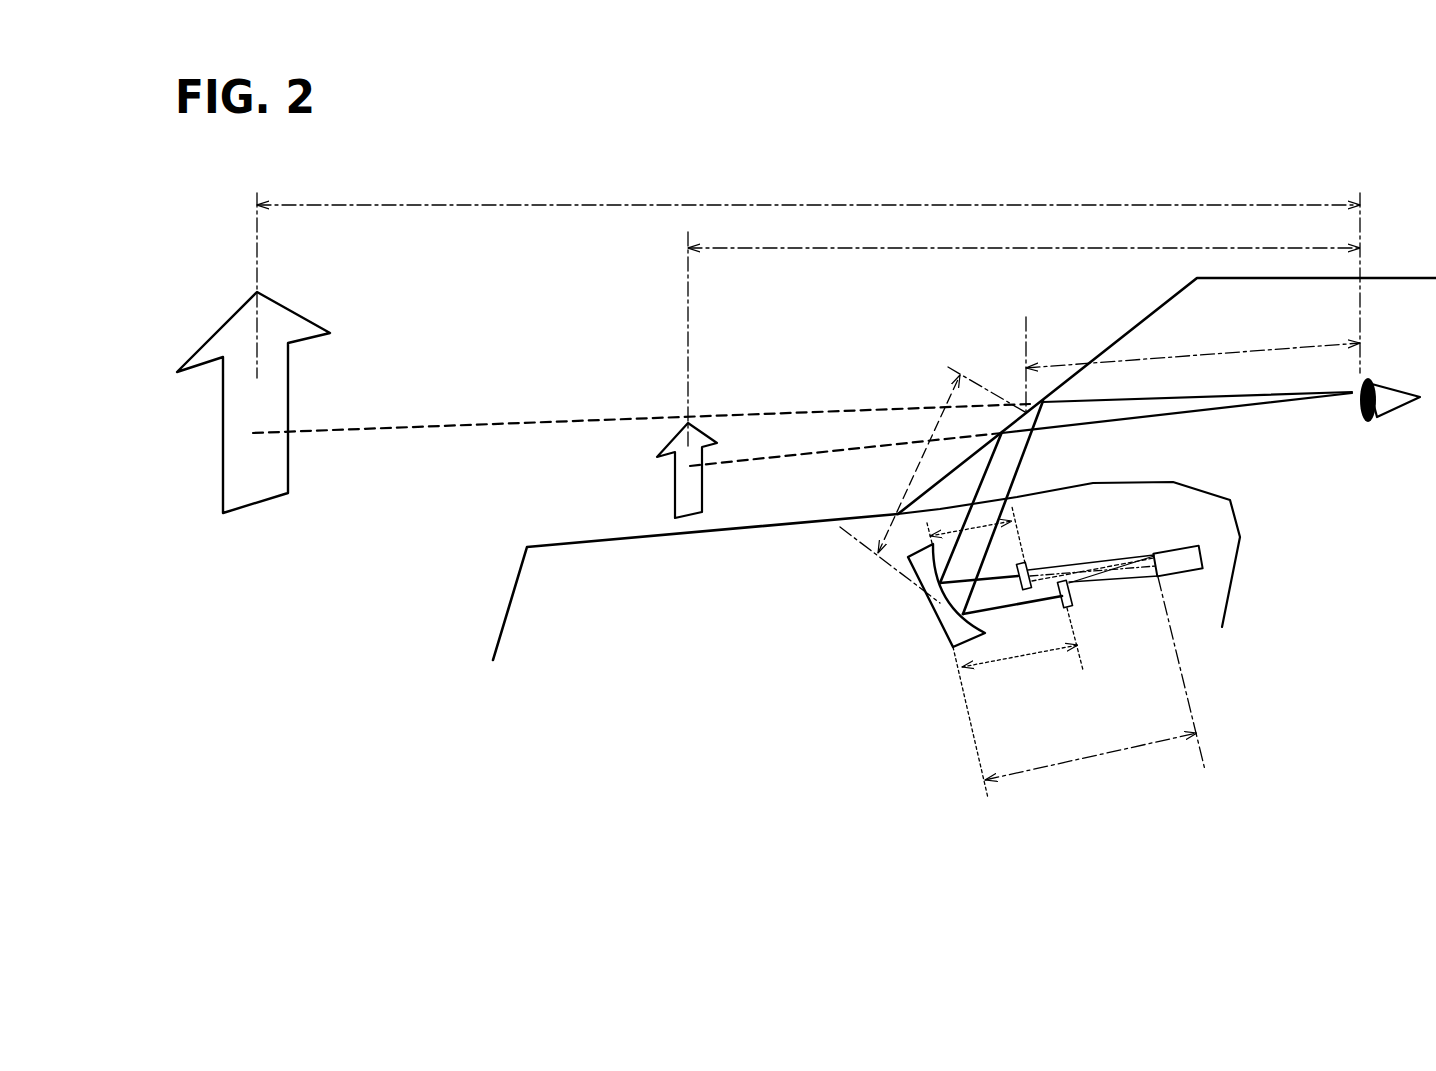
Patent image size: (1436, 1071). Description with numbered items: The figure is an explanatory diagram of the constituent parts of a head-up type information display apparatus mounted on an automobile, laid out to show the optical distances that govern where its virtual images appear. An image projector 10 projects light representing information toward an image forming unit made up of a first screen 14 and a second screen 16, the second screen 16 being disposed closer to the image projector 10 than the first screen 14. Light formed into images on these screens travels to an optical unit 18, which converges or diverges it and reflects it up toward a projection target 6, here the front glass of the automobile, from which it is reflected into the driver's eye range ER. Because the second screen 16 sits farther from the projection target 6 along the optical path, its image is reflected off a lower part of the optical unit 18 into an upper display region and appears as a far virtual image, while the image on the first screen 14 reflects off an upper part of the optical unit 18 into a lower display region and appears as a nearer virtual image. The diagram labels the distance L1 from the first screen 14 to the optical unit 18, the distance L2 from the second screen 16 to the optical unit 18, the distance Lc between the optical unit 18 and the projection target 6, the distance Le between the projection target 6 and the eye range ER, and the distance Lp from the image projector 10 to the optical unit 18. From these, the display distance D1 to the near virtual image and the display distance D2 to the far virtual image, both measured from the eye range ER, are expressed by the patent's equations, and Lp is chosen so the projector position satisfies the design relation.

The projection target 6 is at (1113, 343).
The image projector 10 is at (1182, 548).
The first screen 14 is at (1028, 564).
The second screen 16 is at (1072, 597).
The optical unit 18 is at (930, 613).
The eye range ER is at (1376, 367).
The display distance D1 is at (1024, 236).
The display distance D2 is at (808, 188).
The distance Le is at (1193, 345).
The distance Lc is at (913, 475).
The distance L1 is at (975, 527).
The distance L2 is at (1027, 657).
The distance Lp is at (1095, 678).